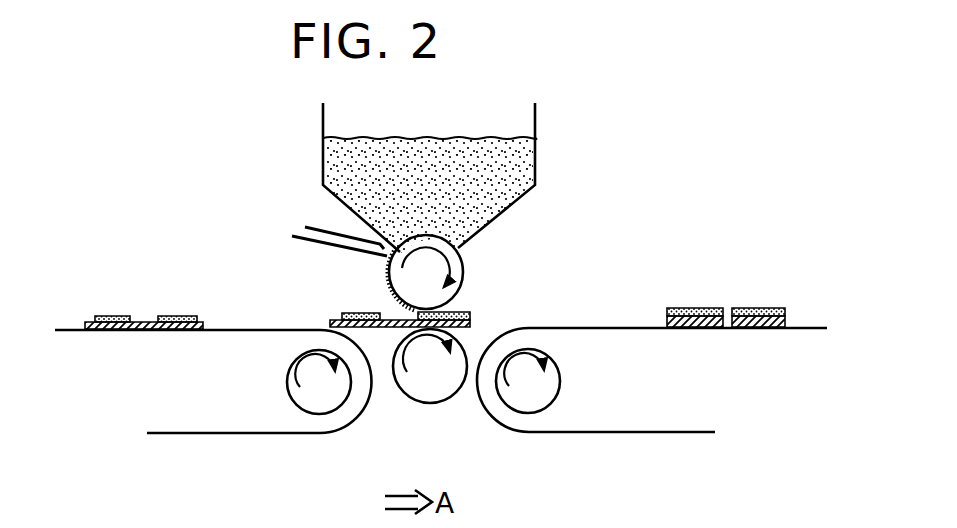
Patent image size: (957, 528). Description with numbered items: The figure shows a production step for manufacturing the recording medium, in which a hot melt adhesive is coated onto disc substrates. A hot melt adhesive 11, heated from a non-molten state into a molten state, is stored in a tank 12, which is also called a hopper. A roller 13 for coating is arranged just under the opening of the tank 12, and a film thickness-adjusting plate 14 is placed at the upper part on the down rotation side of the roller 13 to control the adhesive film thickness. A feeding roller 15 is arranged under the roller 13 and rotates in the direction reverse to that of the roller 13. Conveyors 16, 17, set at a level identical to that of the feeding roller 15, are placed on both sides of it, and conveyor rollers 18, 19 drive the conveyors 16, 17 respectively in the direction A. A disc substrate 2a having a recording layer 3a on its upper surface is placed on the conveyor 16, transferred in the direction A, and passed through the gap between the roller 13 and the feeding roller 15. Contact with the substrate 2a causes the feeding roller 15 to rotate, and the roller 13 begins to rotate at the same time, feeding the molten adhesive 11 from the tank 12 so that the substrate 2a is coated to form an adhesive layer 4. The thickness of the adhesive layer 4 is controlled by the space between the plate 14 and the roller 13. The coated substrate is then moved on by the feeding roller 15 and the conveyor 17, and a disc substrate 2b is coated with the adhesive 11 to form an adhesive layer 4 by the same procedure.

The disc substrate 2a is at (121, 288).
The disc substrate 2b is at (144, 322).
The recording layer 3a is at (130, 319).
The adhesive layer 4 is at (698, 308).
The hot melt adhesive 11 is at (510, 162).
The tank 12 is at (537, 107).
The roller for coating 13 is at (445, 268).
The film thickness-adjusting plate 14 is at (322, 233).
The feeding roller 15 is at (432, 382).
The conveyor 16 is at (325, 435).
The conveyor 17 is at (547, 434).
The conveyor roller 18 is at (303, 388).
The conveyor roller 19 is at (542, 382).